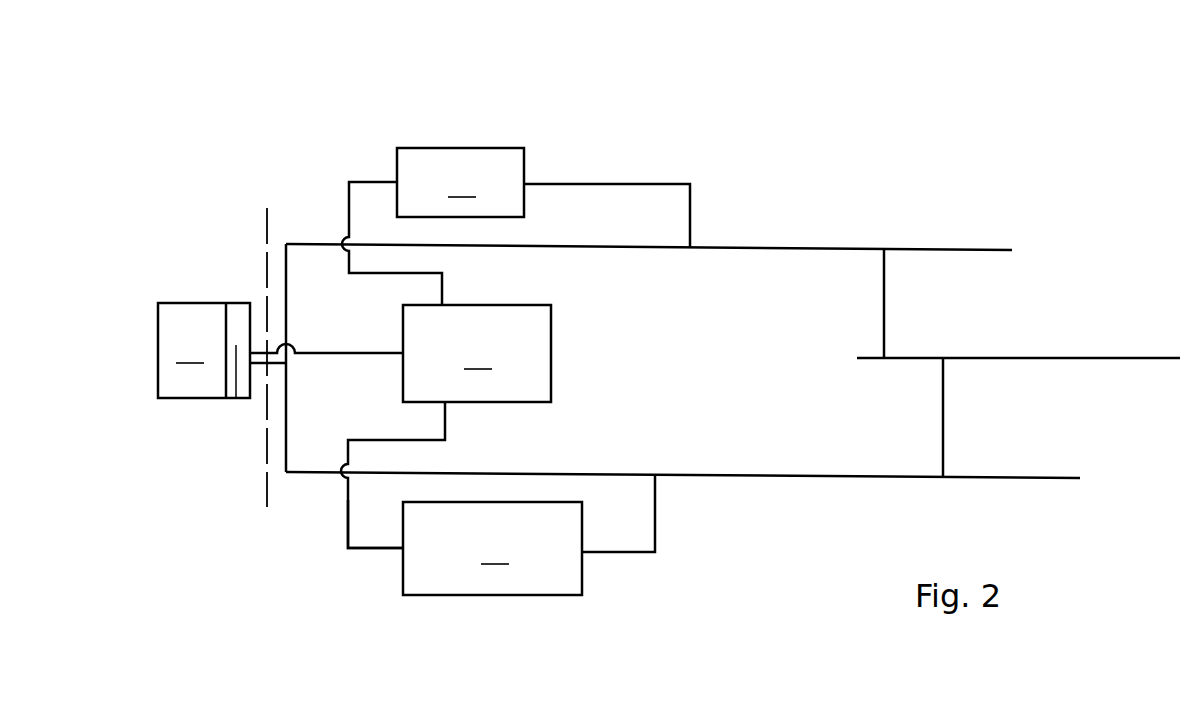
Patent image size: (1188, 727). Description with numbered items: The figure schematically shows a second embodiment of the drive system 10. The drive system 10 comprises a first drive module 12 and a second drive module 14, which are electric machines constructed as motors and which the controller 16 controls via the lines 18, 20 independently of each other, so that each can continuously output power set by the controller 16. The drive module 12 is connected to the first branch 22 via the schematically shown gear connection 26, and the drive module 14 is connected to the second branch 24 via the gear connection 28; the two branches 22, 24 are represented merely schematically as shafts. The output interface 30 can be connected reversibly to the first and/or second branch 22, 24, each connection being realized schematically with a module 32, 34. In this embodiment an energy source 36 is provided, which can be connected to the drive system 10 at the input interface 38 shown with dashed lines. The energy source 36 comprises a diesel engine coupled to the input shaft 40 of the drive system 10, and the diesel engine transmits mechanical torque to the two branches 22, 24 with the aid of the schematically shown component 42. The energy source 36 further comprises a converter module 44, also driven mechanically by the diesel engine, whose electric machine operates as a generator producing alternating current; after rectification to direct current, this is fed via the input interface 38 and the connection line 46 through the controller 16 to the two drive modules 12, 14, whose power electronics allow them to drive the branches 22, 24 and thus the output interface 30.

The drive system 10 is at (729, 117).
The first drive module 12 is at (460, 182).
The second drive module 14 is at (492, 548).
The controller 16 is at (477, 353).
The line 18 is at (373, 180).
The line 20 is at (372, 549).
The first branch 22 is at (768, 247).
The second branch 24 is at (723, 475).
The gear connection 26 is at (602, 182).
The gear connection 28 is at (622, 557).
The output interface 30 is at (1052, 357).
The module 32 is at (886, 300).
The module 34 is at (944, 430).
The energy source 36 is at (204, 350).
The input interface 38 is at (267, 235).
The input shaft 40 is at (255, 365).
The component 42 is at (287, 307).
The converter module 44 is at (236, 398).
The connection line 46 is at (388, 357).